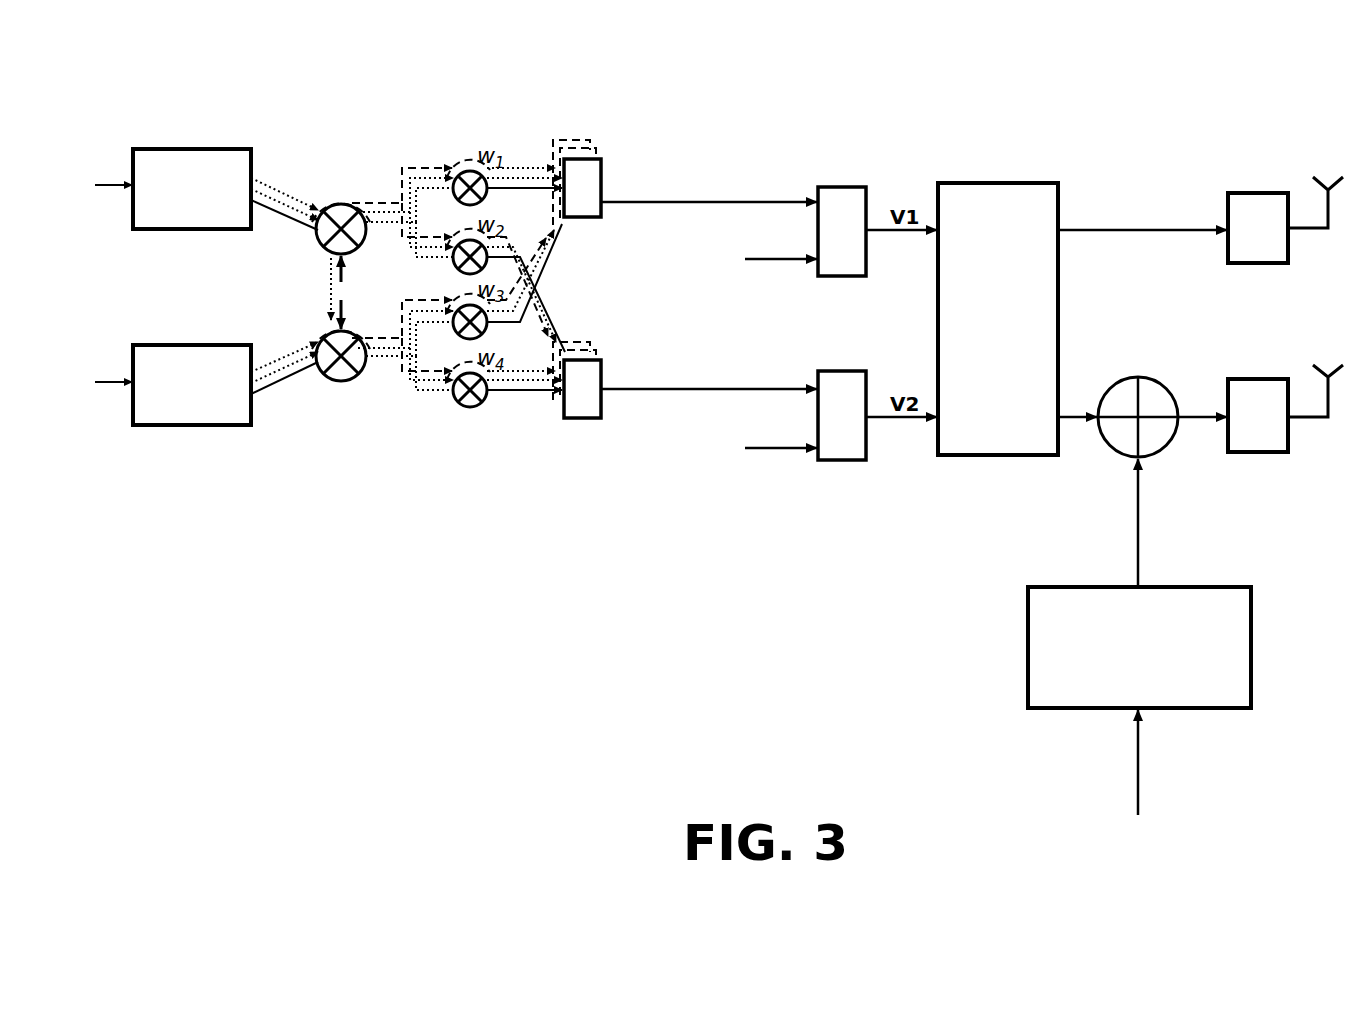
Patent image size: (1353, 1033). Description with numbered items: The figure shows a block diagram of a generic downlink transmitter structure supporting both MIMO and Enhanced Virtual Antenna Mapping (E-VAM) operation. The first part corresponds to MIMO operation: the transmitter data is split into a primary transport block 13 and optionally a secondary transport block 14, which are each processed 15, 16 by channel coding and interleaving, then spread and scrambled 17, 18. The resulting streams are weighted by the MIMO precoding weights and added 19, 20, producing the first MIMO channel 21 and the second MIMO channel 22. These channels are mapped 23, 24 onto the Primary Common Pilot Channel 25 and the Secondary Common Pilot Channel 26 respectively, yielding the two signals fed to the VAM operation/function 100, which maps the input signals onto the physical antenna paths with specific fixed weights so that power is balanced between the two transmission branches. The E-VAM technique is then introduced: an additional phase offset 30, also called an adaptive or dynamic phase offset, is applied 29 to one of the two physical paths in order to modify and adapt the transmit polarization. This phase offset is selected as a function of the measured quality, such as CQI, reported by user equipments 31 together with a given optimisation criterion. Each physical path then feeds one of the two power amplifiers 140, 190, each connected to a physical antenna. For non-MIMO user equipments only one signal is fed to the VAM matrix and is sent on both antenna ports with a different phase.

The primary transport block 13 is at (111, 184).
The secondary transport block 14 is at (111, 381).
The processing of primary transport block 15 is at (191, 165).
The processing of secondary transport block 16 is at (192, 360).
The spreading and scrambling of primary stream 17 is at (343, 218).
The spreading and scrambling of secondary stream 18 is at (342, 378).
The first adder 19 is at (598, 176).
The second adder 20 is at (570, 419).
The MIMO channel #1 21 is at (720, 196).
The MIMO channel #2 22 is at (680, 394).
The mapping of MIMO channel #1 23 is at (850, 189).
The mapping of MIMO channel #2 24 is at (843, 462).
The Primary Common Pilot Channel (P-CPICH) 25 is at (771, 262).
The Secondary Common Pilot Channel (S-CPICH) 26 is at (782, 451).
The phase offset application 29 is at (1112, 450).
The additional phase offset 30 is at (1035, 643).
The user equipment quality reports 31 is at (1138, 775).
The VAM operation/function 100 is at (990, 187).
The first power amplifier 140 is at (1258, 200).
The second power amplifier 190 is at (1262, 452).